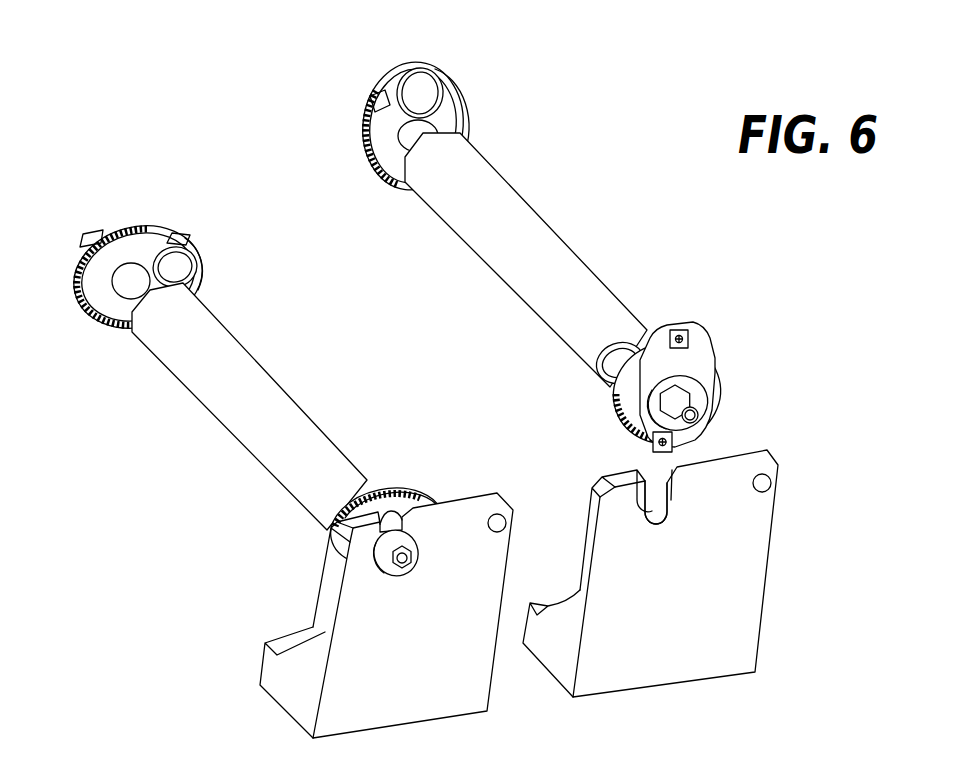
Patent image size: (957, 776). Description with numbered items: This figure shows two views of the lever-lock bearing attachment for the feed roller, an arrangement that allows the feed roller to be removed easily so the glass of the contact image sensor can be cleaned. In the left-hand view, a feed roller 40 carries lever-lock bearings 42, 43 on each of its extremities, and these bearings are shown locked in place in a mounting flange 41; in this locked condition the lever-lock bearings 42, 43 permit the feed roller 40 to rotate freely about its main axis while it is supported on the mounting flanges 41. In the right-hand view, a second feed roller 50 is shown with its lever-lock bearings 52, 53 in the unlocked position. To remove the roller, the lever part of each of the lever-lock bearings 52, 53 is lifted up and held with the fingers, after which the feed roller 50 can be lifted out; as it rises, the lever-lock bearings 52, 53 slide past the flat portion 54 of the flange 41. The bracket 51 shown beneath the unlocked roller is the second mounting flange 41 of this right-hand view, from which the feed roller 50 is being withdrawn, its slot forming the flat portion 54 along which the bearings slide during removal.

The feed roller 40 is at (250, 387).
The mounting flange 41 is at (368, 630).
The lever-lock bearing 42 is at (397, 483).
The lever-lock bearing 43 is at (123, 227).
The feed roller 50 is at (525, 240).
The second mounting bracket 51 is at (613, 533).
The lever-lock bearing 52 is at (697, 377).
The lever-lock bearing 53 is at (387, 135).
The flat portion 54 is at (677, 487).